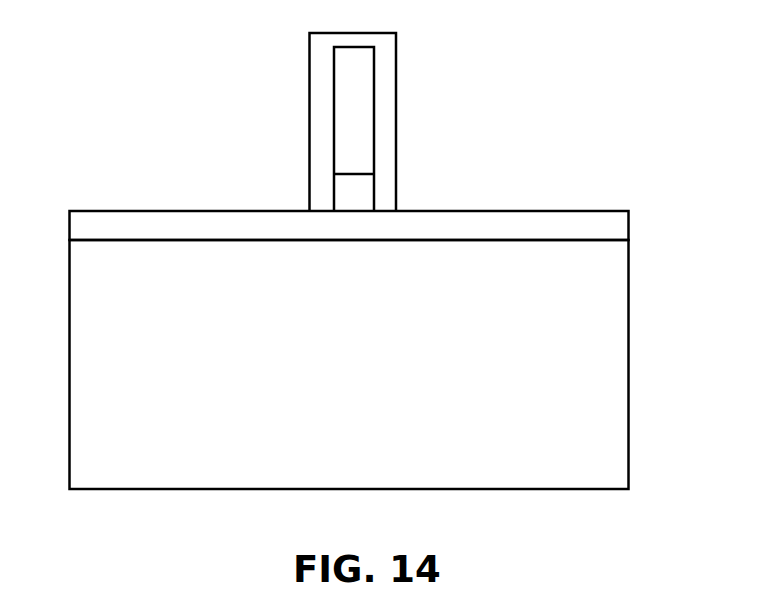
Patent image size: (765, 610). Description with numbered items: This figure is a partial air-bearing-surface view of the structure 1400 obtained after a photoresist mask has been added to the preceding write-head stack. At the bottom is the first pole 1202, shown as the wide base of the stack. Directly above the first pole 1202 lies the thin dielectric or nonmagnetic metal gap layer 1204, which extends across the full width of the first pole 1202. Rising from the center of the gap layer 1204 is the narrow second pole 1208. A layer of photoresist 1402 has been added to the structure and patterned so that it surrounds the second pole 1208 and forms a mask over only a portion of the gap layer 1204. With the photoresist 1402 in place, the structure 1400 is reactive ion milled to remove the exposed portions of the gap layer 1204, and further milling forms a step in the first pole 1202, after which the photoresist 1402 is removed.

The structure 1400 is at (92, 130).
The first pole 1202 is at (628, 352).
The gap layer 1204 is at (628, 232).
The photoresist 1402 is at (396, 163).
The second pole 1208 is at (374, 90).